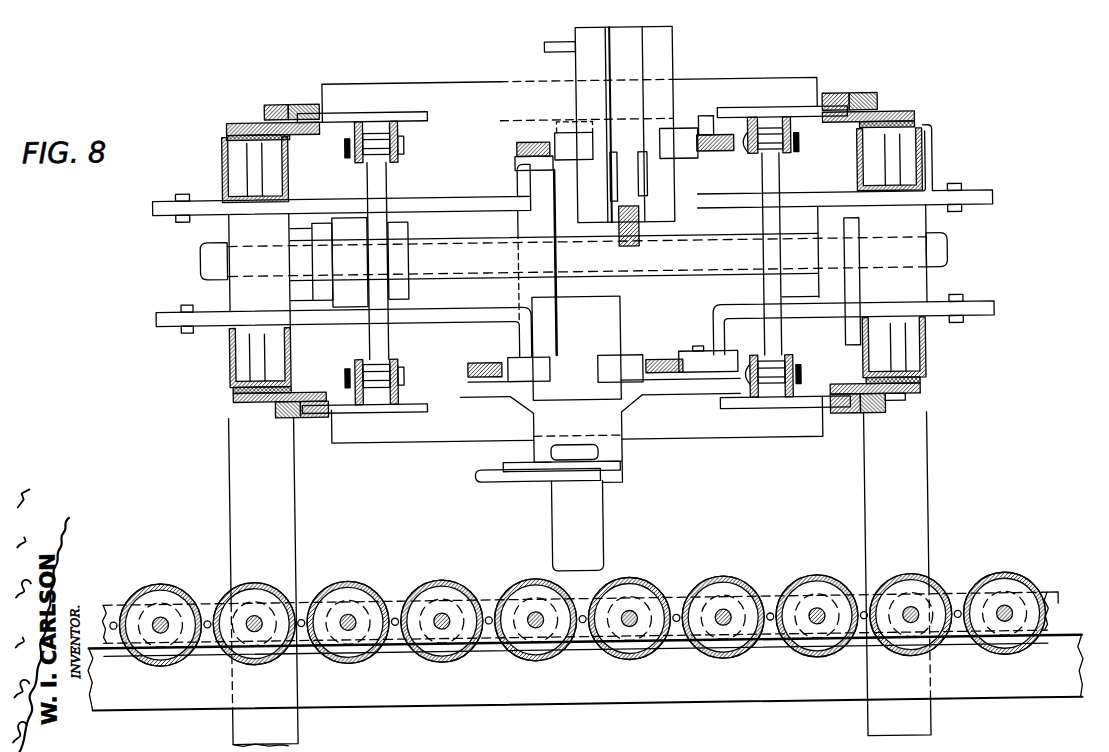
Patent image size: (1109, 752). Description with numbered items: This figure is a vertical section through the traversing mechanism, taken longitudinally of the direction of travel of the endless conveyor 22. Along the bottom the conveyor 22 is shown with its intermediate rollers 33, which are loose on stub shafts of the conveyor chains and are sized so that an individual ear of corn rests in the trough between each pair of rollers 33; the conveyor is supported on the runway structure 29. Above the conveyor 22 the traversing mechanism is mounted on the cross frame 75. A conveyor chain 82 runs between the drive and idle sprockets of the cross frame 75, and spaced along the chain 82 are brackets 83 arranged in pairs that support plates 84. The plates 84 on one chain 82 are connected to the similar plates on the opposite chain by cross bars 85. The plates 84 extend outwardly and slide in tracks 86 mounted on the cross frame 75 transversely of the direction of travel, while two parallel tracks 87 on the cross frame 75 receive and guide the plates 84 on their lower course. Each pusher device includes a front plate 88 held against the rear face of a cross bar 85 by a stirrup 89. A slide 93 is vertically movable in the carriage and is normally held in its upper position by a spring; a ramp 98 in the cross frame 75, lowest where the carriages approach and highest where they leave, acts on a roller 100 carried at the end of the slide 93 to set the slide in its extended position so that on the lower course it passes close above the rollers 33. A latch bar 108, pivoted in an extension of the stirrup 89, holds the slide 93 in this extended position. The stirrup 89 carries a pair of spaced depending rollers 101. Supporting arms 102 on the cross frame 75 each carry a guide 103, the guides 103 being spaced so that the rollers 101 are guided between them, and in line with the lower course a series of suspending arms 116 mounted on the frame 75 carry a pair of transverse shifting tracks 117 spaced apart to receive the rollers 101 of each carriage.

The endless conveyor 22 is at (765, 603).
The conveyor rail 29 is at (773, 688).
The intermediate rollers 33 is at (728, 582).
The cross frame 75 is at (928, 452).
The conveyor chain 82 is at (375, 155).
The brackets 83 is at (353, 156).
The plates 84 is at (351, 115).
The cross bars 85 is at (467, 83).
The tracks 86 is at (314, 99).
The parallel tracks 87 is at (315, 419).
The front plate 88 is at (608, 316).
The stirrup 89 is at (626, 434).
The slide 93 is at (594, 527).
The ramp 98 is at (621, 241).
The roller 100 is at (633, 200).
The depending rollers 101 is at (570, 134).
The supporting arms 102 is at (425, 199).
The guide 103 is at (520, 146).
The latch bar 108 is at (491, 476).
The suspending arms 116 is at (485, 317).
The transverse shifting tracks 117 is at (498, 362).